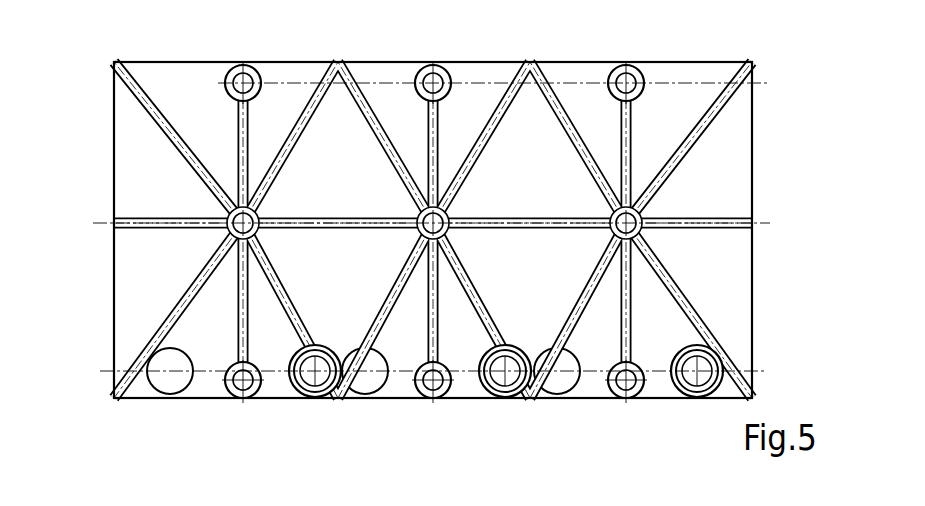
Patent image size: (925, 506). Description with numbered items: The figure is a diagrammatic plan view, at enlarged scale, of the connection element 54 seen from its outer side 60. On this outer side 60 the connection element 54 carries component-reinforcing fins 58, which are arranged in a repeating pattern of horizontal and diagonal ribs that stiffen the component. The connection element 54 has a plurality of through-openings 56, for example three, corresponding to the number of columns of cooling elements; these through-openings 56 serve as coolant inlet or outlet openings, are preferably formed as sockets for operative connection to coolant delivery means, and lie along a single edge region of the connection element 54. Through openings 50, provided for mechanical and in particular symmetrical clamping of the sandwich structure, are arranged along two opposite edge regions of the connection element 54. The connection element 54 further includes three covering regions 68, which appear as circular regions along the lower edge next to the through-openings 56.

The through openings 50 is at (251, 66).
The connection element 54 is at (780, 78).
The through-openings 56 is at (321, 388).
The component-reinforcing fins 58 is at (153, 125).
The outer side 60 is at (702, 195).
The covering regions 68 is at (160, 384).